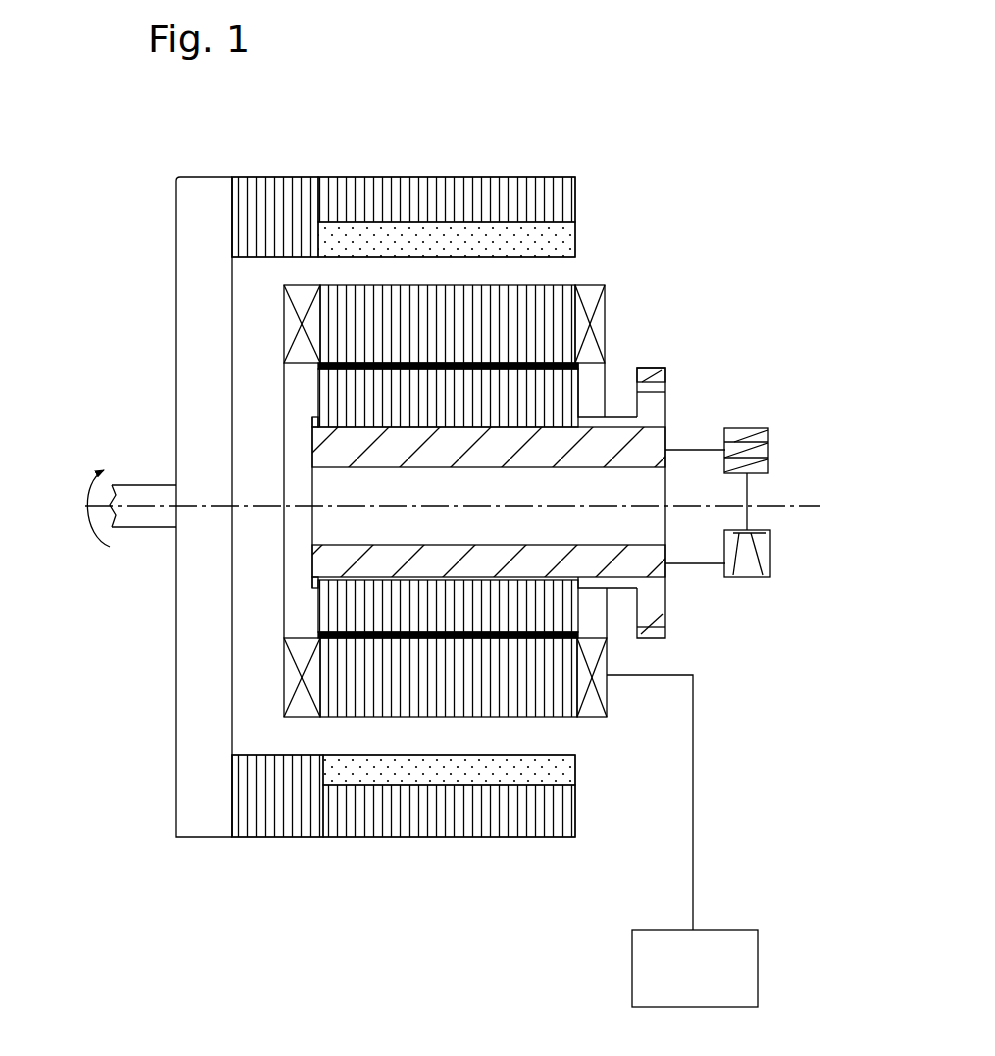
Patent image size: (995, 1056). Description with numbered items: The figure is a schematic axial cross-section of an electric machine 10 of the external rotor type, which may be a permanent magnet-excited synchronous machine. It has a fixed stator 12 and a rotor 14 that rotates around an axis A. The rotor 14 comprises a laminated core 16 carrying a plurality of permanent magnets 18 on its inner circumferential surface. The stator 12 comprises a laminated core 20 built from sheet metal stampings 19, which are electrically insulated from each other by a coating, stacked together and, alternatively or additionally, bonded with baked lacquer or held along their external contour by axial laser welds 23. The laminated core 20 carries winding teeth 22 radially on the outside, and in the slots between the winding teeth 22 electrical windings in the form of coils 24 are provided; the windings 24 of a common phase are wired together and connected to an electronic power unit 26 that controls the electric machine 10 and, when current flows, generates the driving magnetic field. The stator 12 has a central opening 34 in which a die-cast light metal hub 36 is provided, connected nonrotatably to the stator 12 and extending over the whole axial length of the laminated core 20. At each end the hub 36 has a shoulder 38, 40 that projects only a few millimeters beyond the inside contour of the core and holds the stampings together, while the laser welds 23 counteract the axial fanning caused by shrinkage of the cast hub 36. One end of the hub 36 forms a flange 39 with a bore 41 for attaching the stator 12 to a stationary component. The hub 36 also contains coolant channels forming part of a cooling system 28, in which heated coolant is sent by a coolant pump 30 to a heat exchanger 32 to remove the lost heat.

The electric machine 10 is at (590, 108).
The stator 12 is at (654, 304).
The rotor 14 is at (207, 860).
The laminated core 16 is at (360, 177).
The permanent magnets 18 is at (575, 237).
The sheet metal stampings 19 is at (568, 610).
The laminated core 20 is at (627, 644).
The winding teeth 22 is at (565, 706).
The axial laser welds 23 is at (334, 624).
The coils 24 is at (607, 320).
The electronic power unit 26 is at (758, 970).
The cooling system 28 is at (790, 521).
The coolant pump 30 is at (771, 573).
The heat exchanger 32 is at (768, 455).
The central opening 34 is at (330, 518).
The hub 36 is at (690, 401).
The shoulder 38 is at (312, 420).
The flange 39 is at (665, 437).
The shoulder 40 is at (586, 421).
The bore 41 is at (665, 385).